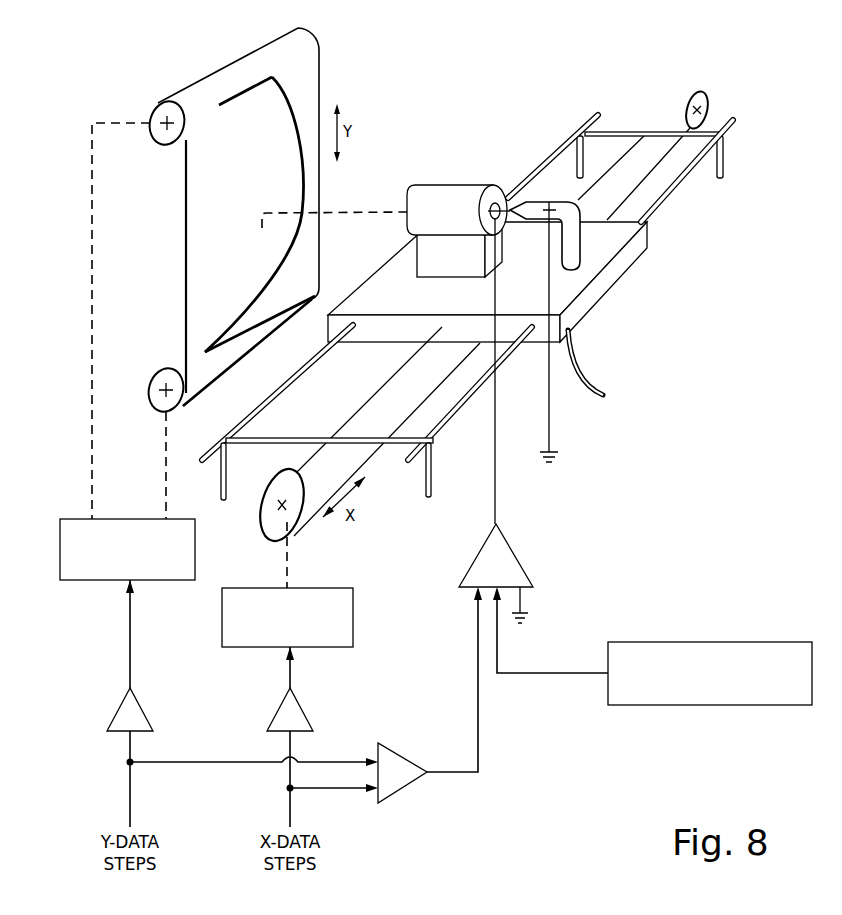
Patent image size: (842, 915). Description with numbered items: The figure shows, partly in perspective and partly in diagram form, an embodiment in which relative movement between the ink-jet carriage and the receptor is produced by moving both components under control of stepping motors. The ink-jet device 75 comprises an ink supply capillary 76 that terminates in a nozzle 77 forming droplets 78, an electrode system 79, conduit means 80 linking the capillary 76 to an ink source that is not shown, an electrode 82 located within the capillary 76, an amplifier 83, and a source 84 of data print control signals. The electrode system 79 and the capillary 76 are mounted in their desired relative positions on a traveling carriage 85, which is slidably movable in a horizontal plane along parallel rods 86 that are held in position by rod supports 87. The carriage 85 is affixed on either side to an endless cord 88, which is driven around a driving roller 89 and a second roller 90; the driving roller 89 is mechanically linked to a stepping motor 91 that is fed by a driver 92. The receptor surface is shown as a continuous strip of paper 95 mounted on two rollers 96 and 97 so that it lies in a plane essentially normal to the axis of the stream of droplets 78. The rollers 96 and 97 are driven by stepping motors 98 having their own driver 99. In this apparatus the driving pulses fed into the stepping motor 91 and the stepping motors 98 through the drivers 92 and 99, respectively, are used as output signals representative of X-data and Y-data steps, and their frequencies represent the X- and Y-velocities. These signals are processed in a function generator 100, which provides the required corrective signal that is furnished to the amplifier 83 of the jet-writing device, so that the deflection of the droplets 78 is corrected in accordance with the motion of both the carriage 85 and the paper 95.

The ink-jet device 75 is at (467, 182).
The ink supply capillary 76 is at (573, 253).
The nozzle 77 is at (512, 198).
The droplets 78 is at (360, 208).
The electrode system 79 is at (438, 190).
The conduit means 80 is at (605, 386).
The electrode 82 is at (549, 202).
The amplifier 83 is at (505, 550).
The source of data print control signals 84 is at (794, 648).
The traveling carriage 85 is at (590, 293).
The parallel rods 86 is at (290, 389).
The rod supports 87 is at (428, 478).
The endless cord 88 is at (657, 133).
The driving roller 89 is at (278, 497).
The roller 90 is at (703, 100).
The stepping motor 91 is at (343, 620).
The driver 92 is at (283, 712).
The paper 95 is at (316, 58).
The roller 96 is at (153, 380).
The roller 97 is at (150, 113).
The stepping motors 98 is at (65, 545).
The driver 99 is at (135, 712).
The function generator 100 is at (395, 754).